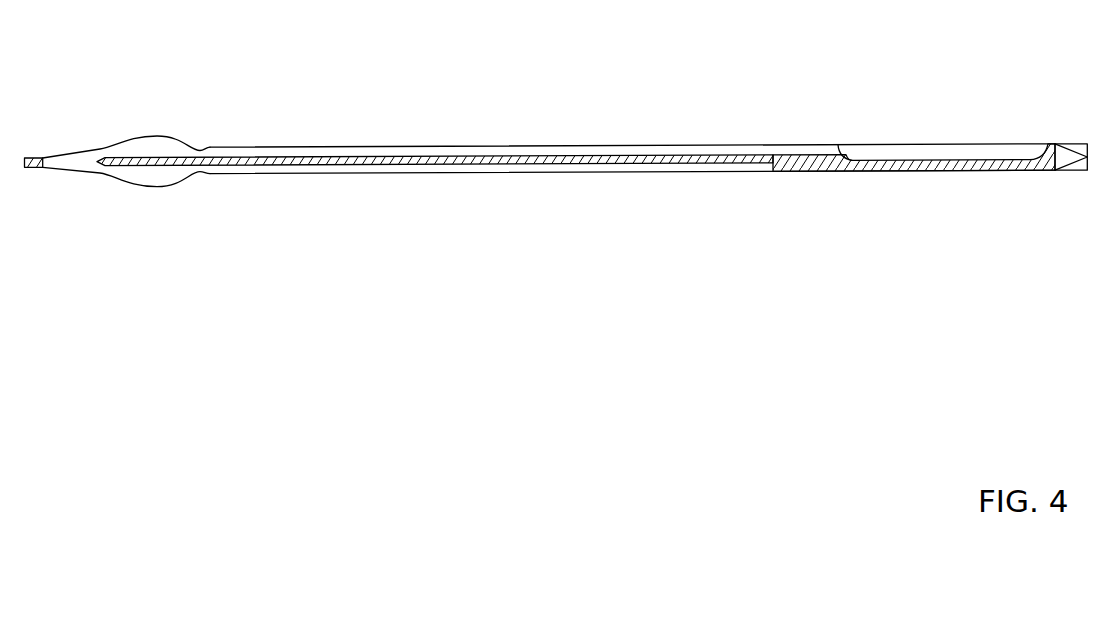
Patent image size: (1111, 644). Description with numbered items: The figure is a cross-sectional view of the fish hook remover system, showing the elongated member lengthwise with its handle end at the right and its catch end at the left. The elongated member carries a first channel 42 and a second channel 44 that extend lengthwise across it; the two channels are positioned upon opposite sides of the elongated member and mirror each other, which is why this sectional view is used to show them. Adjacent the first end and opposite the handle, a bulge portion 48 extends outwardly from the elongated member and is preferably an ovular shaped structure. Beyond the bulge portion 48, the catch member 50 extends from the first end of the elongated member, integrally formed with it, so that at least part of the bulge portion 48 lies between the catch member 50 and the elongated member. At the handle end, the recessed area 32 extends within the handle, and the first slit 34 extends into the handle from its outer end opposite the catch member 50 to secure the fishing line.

The recessed area 32 is at (908, 160).
The first slit 34 is at (1058, 157).
The first channel 42 is at (570, 152).
The second channel 44 is at (582, 171).
The bulge portion 48 is at (160, 137).
The catch member 50 is at (35, 165).